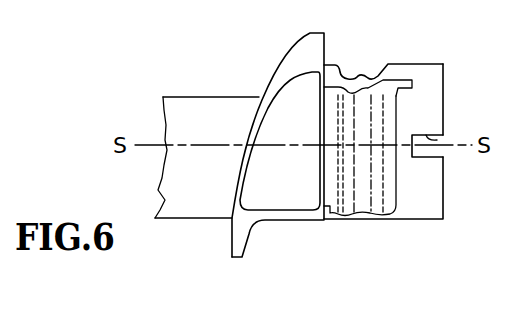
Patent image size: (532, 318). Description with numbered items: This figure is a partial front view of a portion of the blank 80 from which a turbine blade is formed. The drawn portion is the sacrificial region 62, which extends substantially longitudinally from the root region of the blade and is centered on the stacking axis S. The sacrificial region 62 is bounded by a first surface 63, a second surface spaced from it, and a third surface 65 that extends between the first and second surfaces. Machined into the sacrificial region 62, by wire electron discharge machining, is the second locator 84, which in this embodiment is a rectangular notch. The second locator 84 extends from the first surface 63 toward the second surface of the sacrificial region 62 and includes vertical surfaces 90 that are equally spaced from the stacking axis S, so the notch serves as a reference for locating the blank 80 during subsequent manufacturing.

The blank 80 is at (242, 85).
The sacrificial region 62 is at (437, 206).
The first surface 63 is at (432, 72).
The third surface 65 is at (444, 78).
The second locator 84 is at (437, 153).
The vertical surfaces 90 is at (423, 155).